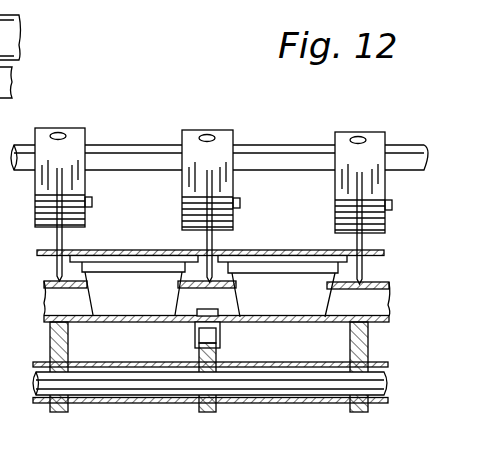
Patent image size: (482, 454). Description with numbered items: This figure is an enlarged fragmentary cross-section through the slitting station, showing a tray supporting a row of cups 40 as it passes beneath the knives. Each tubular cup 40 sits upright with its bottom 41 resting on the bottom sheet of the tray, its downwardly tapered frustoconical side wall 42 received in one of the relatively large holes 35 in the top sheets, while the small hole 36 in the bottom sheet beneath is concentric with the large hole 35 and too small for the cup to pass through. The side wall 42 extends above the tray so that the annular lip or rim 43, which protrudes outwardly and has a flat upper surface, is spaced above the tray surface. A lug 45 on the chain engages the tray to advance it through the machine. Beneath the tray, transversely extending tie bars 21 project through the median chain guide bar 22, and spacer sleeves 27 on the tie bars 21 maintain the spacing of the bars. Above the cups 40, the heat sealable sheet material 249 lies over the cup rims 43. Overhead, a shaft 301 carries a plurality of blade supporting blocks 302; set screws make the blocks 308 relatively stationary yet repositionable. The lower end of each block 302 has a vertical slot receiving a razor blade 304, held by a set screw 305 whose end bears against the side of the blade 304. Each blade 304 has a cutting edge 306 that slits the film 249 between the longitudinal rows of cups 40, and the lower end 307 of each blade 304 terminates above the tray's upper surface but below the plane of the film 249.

The tie bar 21 is at (313, 392).
The chain guide bar 22 is at (210, 413).
The spacer sleeve 27 is at (328, 363).
The hole 35 is at (237, 290).
The small hole 36 is at (284, 323).
The cup 40 is at (84, 310).
The bottom 41 is at (138, 323).
The side wall 42 is at (117, 304).
The lip or rim 43 is at (150, 263).
The lug 45 is at (221, 315).
The sheet material 249 is at (146, 250).
The shaft 301 is at (145, 151).
The blade supporting block 302 is at (83, 128).
The razor blade 304 is at (55, 240).
The set screw 305 is at (94, 204).
The cutting edge 306 is at (57, 263).
The lower end 307 is at (43, 283).
The block 308 is at (74, 146).